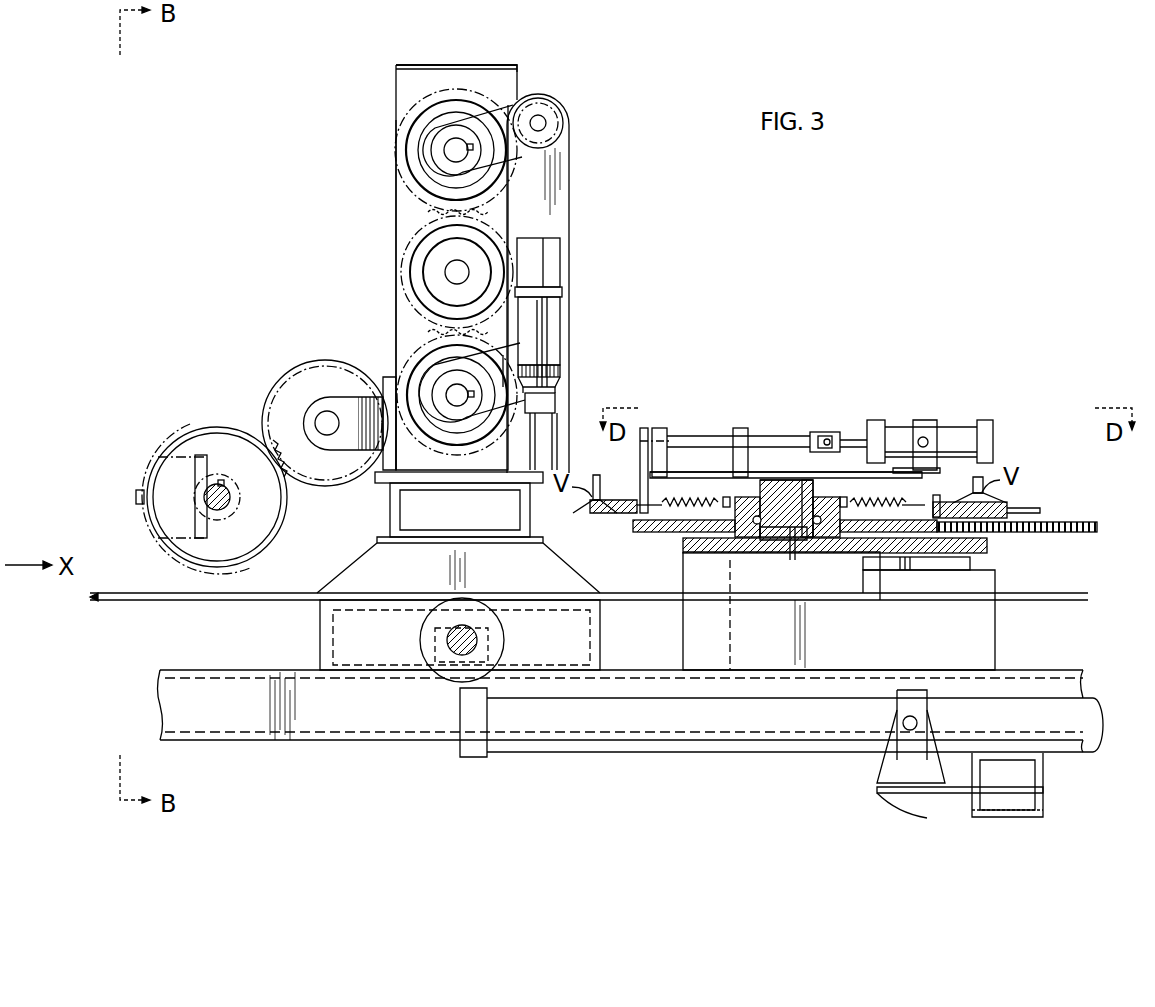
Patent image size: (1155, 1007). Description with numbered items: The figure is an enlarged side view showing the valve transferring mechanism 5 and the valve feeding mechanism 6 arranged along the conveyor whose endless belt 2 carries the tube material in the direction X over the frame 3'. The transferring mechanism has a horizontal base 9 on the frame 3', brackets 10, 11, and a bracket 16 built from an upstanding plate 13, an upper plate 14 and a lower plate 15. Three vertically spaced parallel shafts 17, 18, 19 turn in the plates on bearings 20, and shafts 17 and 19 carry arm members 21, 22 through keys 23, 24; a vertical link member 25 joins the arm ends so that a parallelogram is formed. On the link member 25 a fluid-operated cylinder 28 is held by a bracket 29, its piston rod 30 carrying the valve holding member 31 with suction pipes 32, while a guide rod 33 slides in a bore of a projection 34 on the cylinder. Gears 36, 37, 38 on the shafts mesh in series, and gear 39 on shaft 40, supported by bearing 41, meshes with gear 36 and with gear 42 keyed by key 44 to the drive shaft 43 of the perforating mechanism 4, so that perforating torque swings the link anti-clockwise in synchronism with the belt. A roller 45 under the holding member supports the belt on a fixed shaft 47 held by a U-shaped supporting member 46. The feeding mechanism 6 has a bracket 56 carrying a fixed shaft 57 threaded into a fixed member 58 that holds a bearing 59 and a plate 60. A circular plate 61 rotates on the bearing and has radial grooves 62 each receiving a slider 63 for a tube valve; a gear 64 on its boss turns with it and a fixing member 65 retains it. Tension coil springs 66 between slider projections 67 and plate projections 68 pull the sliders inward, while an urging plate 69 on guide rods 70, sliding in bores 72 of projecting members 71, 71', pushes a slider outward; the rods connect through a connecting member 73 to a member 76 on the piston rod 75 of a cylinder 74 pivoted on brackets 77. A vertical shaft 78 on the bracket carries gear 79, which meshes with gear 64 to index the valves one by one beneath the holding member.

The endless belt 2 is at (146, 602).
The frame 3' is at (631, 727).
The perforating mechanism 4 is at (139, 482).
The valve transferring mechanism 5 is at (350, 183).
The valve feeding mechanism 6 is at (893, 389).
The base 9 is at (390, 518).
The bracket 10 is at (320, 630).
The bracket 11 is at (350, 566).
The upstanding plate 13 is at (396, 82).
The upper plate 14 is at (497, 65).
The lower plate 15 is at (388, 483).
The bracket 16 is at (430, 60).
The shaft 17 is at (450, 385).
The shaft 18 is at (446, 270).
The shaft 19 is at (443, 155).
The bearing 20 is at (416, 152).
The arm member 21 is at (500, 353).
The arm member 22 is at (495, 103).
The key 23 is at (474, 395).
The key 24 is at (472, 144).
The link member 25 is at (570, 178).
The fluid-operated cylinder 28 is at (558, 292).
The bracket 29 is at (556, 250).
The piston rod 30 is at (560, 383).
The valve holding member 31 is at (556, 404).
The pipe 32 is at (556, 437).
The guide rod 33 is at (550, 320).
The projection 34 is at (550, 368).
The gear 36 is at (388, 374).
The gear 37 is at (396, 213).
The gear 38 is at (390, 126).
The gear 39 is at (269, 402).
The shaft 40 is at (322, 432).
The bearing 41 is at (358, 410).
The gear 42 is at (187, 435).
The drive shaft 43 is at (218, 510).
The key 44 is at (222, 482).
The roller 45 is at (421, 646).
The U-shaped supporting member 46 is at (433, 628).
The fixed shaft 47 is at (477, 640).
The bracket 56 is at (992, 636).
The fixed shaft 57 is at (807, 553).
The fixed member 58 is at (760, 492).
The bearing 59 is at (775, 540).
The plate 60 is at (790, 478).
The circular plate 61 is at (1019, 503).
The radial groove 62 is at (1040, 511).
The slider 63 is at (1000, 502).
The gear 64 is at (660, 532).
The fixing member 65 is at (741, 495).
The tension coil spring 66 is at (874, 493).
The projection 67 is at (926, 495).
The projection 68 is at (845, 490).
The urging plate 69 is at (642, 466).
The guide rod 70 is at (710, 435).
The projecting member 71 is at (660, 431).
The projecting member 71' is at (743, 431).
The bore 72 is at (668, 438).
The connecting member 73 is at (814, 432).
The fluid-operated cylinder 74 is at (948, 434).
The piston rod 75 is at (856, 434).
The member 76 is at (830, 434).
The bracket 77 is at (920, 434).
The vertical shaft 78 is at (926, 544).
The gear 79 is at (1054, 532).